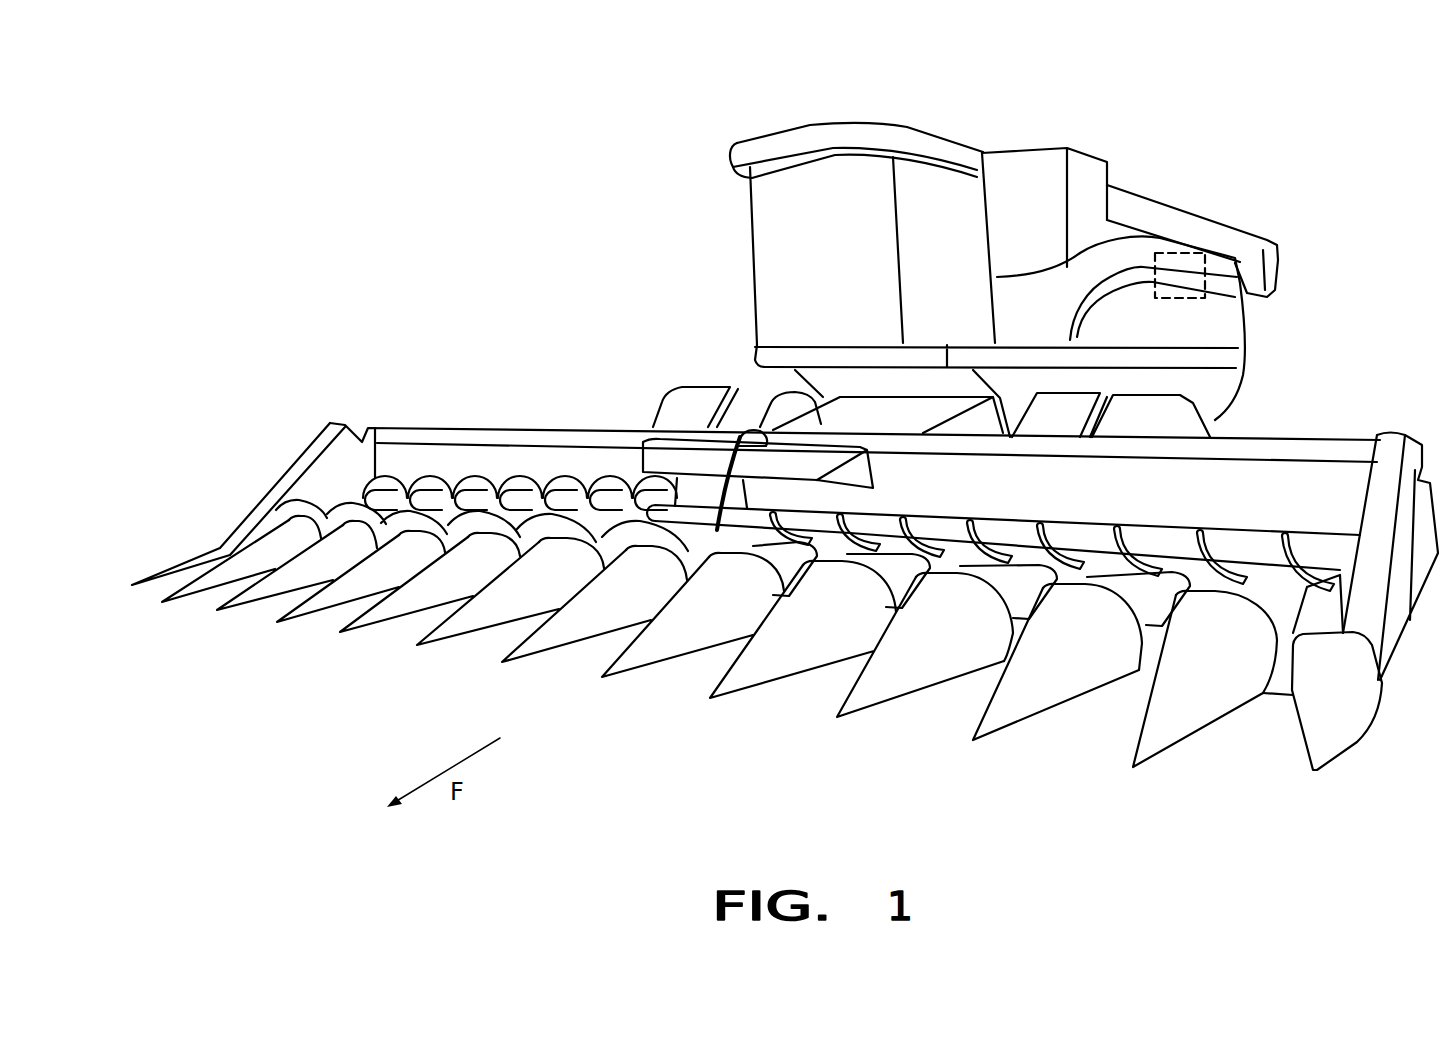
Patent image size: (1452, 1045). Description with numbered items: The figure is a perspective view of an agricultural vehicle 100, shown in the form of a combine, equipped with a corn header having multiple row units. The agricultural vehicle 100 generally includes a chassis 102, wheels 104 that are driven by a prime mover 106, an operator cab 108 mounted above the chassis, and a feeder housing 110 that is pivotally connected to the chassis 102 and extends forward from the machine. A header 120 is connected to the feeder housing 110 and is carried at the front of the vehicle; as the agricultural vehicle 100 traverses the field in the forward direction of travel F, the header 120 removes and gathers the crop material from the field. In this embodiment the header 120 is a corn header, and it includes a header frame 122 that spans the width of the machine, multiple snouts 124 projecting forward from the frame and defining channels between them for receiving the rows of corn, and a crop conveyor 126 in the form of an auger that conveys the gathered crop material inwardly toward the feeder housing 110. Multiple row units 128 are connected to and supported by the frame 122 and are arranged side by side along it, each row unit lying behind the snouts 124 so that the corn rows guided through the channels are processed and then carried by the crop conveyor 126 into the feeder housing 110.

The agricultural vehicle 100 is at (1178, 146).
The chassis 102 is at (1235, 337).
The wheels 104 is at (680, 408).
The prime mover 106 is at (1193, 253).
The operator cab 108 is at (767, 235).
The feeder housing 110 is at (817, 422).
The header 120 is at (255, 483).
The header frame 122 is at (490, 438).
The snouts 124 is at (912, 670).
The crop conveyor 126 is at (1247, 519).
The row units 128 is at (760, 705).